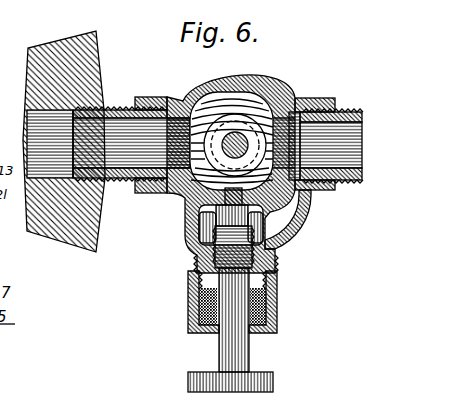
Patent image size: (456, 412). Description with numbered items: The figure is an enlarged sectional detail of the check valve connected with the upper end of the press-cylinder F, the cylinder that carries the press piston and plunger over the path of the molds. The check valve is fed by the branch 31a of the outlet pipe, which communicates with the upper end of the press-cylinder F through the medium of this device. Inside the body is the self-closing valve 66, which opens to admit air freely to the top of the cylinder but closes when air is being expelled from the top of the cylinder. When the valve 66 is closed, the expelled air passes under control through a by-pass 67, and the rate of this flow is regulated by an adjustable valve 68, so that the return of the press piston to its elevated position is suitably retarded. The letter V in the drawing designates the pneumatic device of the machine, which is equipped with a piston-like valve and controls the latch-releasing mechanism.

The press-cylinder F is at (97, 46).
The pneumatic device V is at (182, 247).
The self-closing valve 66 is at (220, 127).
The by-pass 67 is at (271, 230).
The adjustable valve 68 is at (198, 224).
The branch 31a is at (333, 183).